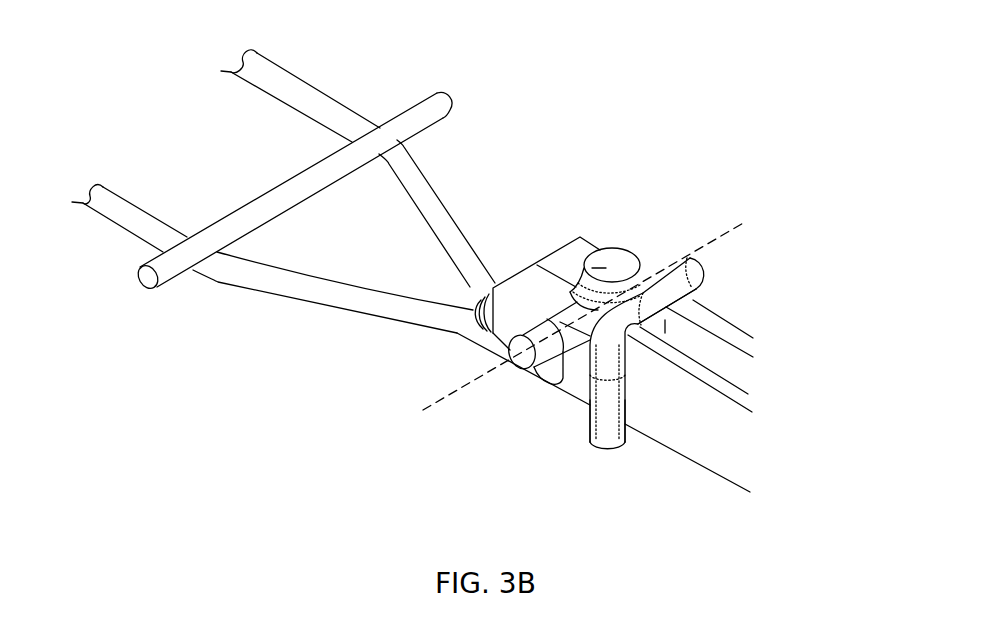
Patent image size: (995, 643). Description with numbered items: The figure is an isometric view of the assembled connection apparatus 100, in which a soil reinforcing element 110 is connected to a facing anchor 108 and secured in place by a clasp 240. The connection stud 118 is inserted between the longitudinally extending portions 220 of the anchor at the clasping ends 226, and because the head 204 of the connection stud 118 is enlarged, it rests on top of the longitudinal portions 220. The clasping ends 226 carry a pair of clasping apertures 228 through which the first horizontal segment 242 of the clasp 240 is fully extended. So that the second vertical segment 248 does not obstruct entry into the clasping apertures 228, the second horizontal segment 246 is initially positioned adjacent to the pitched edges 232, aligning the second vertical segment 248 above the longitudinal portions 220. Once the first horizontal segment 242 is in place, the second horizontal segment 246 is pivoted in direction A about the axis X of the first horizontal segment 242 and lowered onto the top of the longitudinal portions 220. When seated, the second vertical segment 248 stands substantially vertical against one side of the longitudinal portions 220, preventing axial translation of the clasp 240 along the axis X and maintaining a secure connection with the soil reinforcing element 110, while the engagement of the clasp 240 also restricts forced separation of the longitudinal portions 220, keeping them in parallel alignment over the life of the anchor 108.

The connection apparatus 100 is at (605, 157).
The facing anchor 108 is at (713, 452).
The soil reinforcing element 110 is at (305, 103).
The connection stud 118 is at (471, 309).
The head 204 is at (496, 287).
The longitudinally extending portions 220 is at (747, 348).
The clasping ends 226 is at (535, 262).
The clasping apertures 228 is at (540, 372).
The pitched edges 232 is at (500, 281).
The clasp 240 is at (715, 258).
The first horizontal segment 242 is at (508, 356).
The second horizontal segment 246 is at (690, 303).
The second vertical segment 248 is at (605, 433).
The direction A is at (654, 241).
The axis X is at (577, 322).